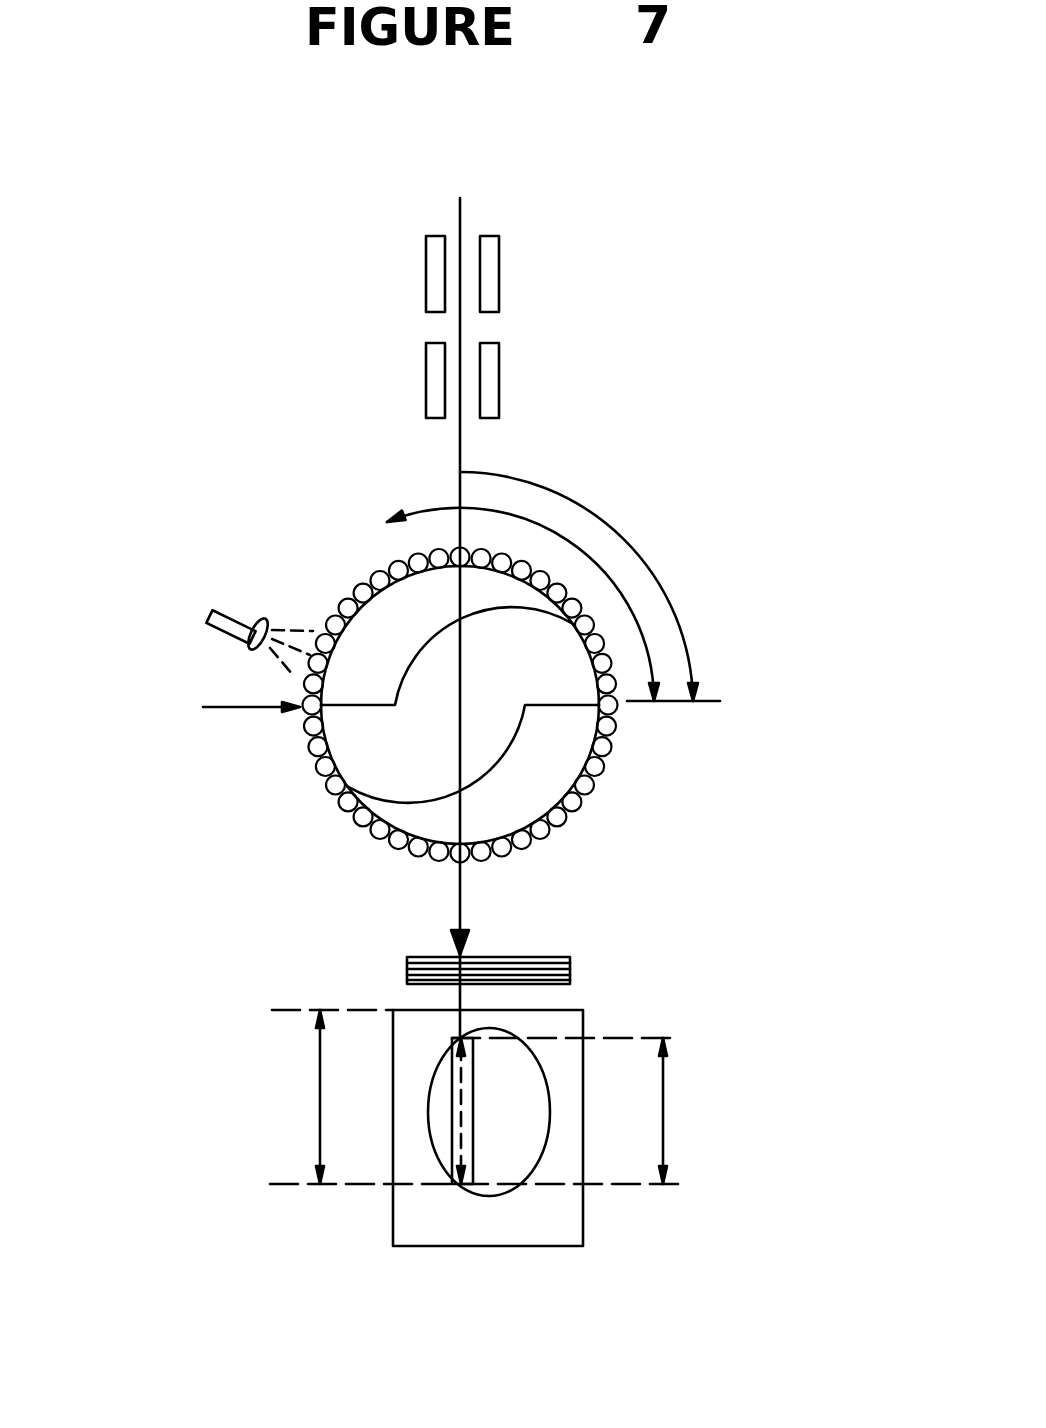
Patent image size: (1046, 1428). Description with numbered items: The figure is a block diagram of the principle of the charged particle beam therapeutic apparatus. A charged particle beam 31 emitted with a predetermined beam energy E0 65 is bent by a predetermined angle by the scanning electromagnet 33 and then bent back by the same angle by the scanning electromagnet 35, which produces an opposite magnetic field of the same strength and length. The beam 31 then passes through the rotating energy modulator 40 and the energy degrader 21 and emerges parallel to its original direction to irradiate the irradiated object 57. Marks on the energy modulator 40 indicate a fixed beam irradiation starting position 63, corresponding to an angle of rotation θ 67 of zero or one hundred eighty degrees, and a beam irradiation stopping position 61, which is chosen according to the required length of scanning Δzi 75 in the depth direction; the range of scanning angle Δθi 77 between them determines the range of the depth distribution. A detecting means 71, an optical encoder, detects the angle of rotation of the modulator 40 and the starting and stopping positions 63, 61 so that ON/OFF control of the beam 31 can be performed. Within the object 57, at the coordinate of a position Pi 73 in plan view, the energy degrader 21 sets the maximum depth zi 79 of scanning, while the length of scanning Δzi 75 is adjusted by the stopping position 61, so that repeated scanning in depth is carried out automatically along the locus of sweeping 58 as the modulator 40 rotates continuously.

The charged particle beam 31 is at (460, 208).
The beam energy E0 65 is at (532, 188).
The scanning electromagnet 33 is at (480, 277).
The scanning electromagnet 35 is at (480, 388).
The energy modulator 40 is at (332, 786).
The beam irradiation stopping position 61 is at (396, 553).
The range of scanning angle Δθi 77 is at (548, 527).
The angle of rotation θ 67 is at (677, 518).
The beam irradiation starting position 63 is at (705, 703).
The detecting means 71 is at (307, 697).
The energy degrader 21 is at (540, 957).
The coordinate of position Pi 73 is at (462, 1018).
The irradiated object 57 is at (583, 1220).
The locus of sweeping 58 is at (460, 1145).
The maximum depth zi 79 is at (468, 1097).
The length of scanning Δzi 75 is at (587, 1111).